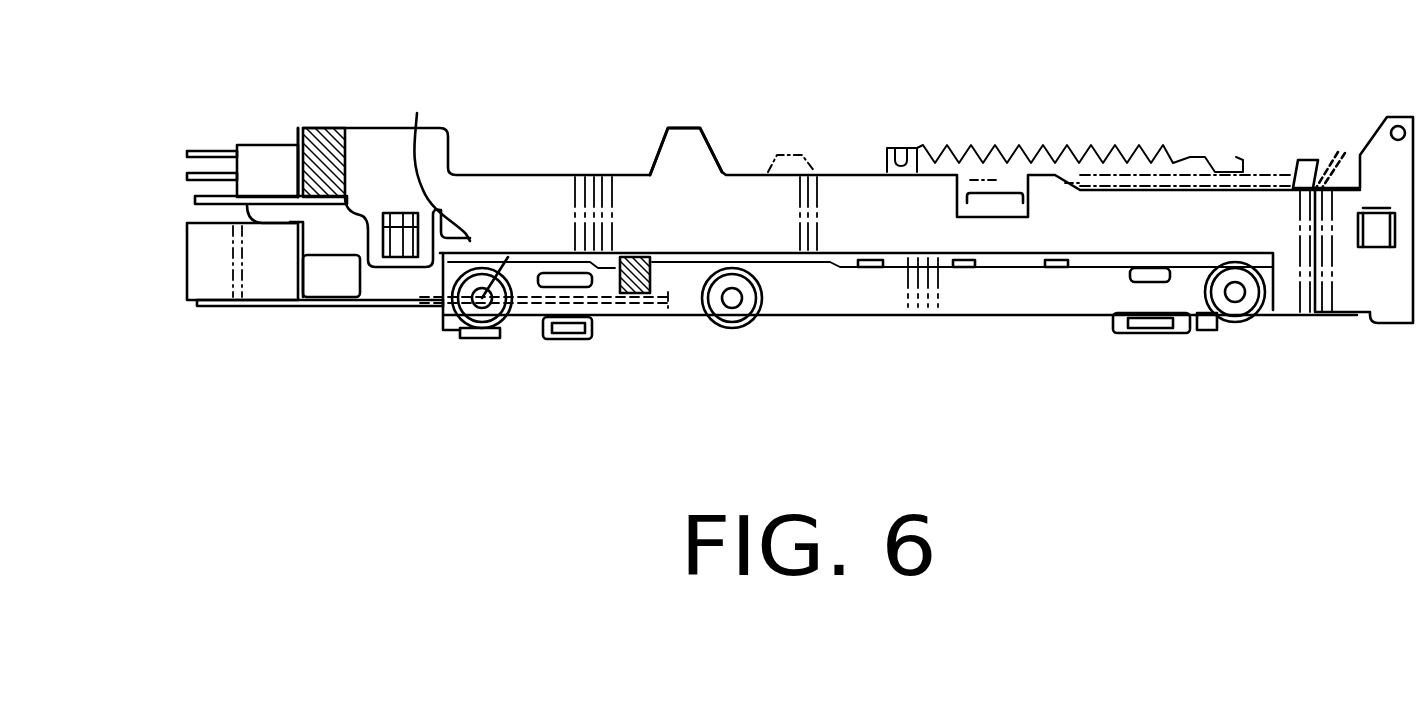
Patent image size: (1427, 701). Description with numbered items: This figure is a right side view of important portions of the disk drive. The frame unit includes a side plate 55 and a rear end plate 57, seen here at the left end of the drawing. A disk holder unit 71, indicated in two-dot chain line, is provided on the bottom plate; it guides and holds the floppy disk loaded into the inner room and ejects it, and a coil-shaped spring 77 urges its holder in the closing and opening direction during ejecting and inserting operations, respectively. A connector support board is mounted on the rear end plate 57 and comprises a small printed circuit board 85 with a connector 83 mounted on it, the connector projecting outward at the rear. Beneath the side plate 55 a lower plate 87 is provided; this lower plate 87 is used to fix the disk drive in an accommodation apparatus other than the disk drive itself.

The side plate 55 is at (720, 140).
The rear end plate 57 is at (300, 127).
The disk holder unit 71 is at (797, 155).
The coil-shaped spring 77 is at (1000, 148).
The connector 83 is at (250, 145).
The small printed circuit board 85 is at (195, 200).
The lower plate 87 is at (865, 317).